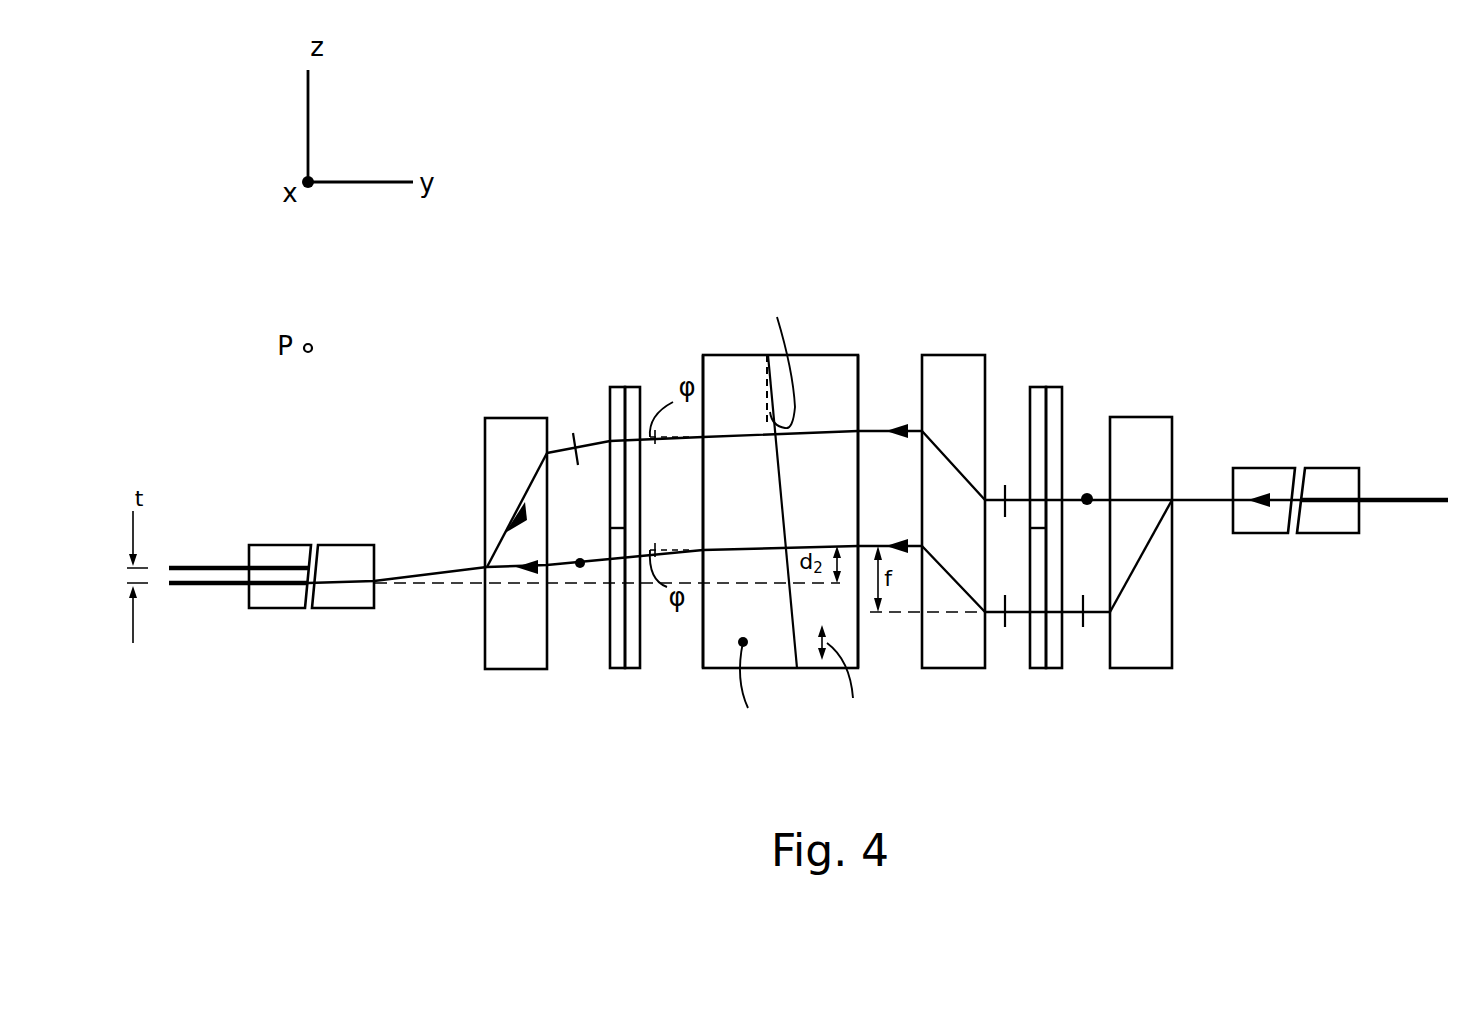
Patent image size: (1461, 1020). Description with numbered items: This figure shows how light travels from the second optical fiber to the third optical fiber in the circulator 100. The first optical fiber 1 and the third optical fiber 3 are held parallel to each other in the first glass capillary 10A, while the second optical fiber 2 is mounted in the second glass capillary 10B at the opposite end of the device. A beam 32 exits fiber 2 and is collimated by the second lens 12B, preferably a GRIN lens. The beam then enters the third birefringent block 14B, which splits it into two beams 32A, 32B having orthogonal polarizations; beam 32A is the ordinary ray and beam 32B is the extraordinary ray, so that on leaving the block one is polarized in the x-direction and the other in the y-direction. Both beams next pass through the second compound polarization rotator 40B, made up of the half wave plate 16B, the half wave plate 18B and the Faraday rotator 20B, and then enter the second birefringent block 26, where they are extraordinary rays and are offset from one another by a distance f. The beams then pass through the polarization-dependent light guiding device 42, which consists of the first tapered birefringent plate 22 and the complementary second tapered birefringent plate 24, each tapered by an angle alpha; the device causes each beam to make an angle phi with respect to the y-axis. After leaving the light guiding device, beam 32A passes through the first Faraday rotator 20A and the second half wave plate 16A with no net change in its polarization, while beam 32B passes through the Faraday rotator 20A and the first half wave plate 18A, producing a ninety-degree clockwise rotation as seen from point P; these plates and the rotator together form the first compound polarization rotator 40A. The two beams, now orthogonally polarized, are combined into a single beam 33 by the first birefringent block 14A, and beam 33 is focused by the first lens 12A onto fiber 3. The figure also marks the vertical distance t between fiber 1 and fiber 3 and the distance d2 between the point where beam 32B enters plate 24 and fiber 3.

The first optical fiber 1 is at (200, 565).
The second optical fiber 2 is at (1387, 507).
The third optical fiber 3 is at (217, 588).
The first glass capillary 10A is at (263, 543).
The first lens 12A is at (333, 543).
The first birefringent block 14A is at (518, 418).
The second half wave plate 16A is at (617, 387).
The first half wave plate 18A is at (618, 672).
The first Faraday rotator 20A is at (630, 387).
The first compound polarization rotator 40A is at (599, 420).
The first tapered birefringent plate 22 is at (722, 355).
The second tapered birefringent plate 24 is at (825, 355).
The polarization-dependent light guiding device 42 is at (800, 421).
The second birefringent block 26 is at (952, 355).
The half wave plate 16B is at (1037, 387).
The half wave plate 18B is at (1037, 670).
The Faraday rotator 20B is at (1055, 387).
The second compound polarization rotator 40B is at (1070, 486).
The third birefringent block 14B is at (1138, 417).
The second lens 12B is at (1265, 468).
The second glass capillary 10B is at (1322, 468).
The beam 32 is at (1274, 503).
The beam 32A is at (1073, 493).
The beam 32B is at (1097, 615).
The single beam 33 is at (430, 572).
The circulator 100 is at (1025, 152).